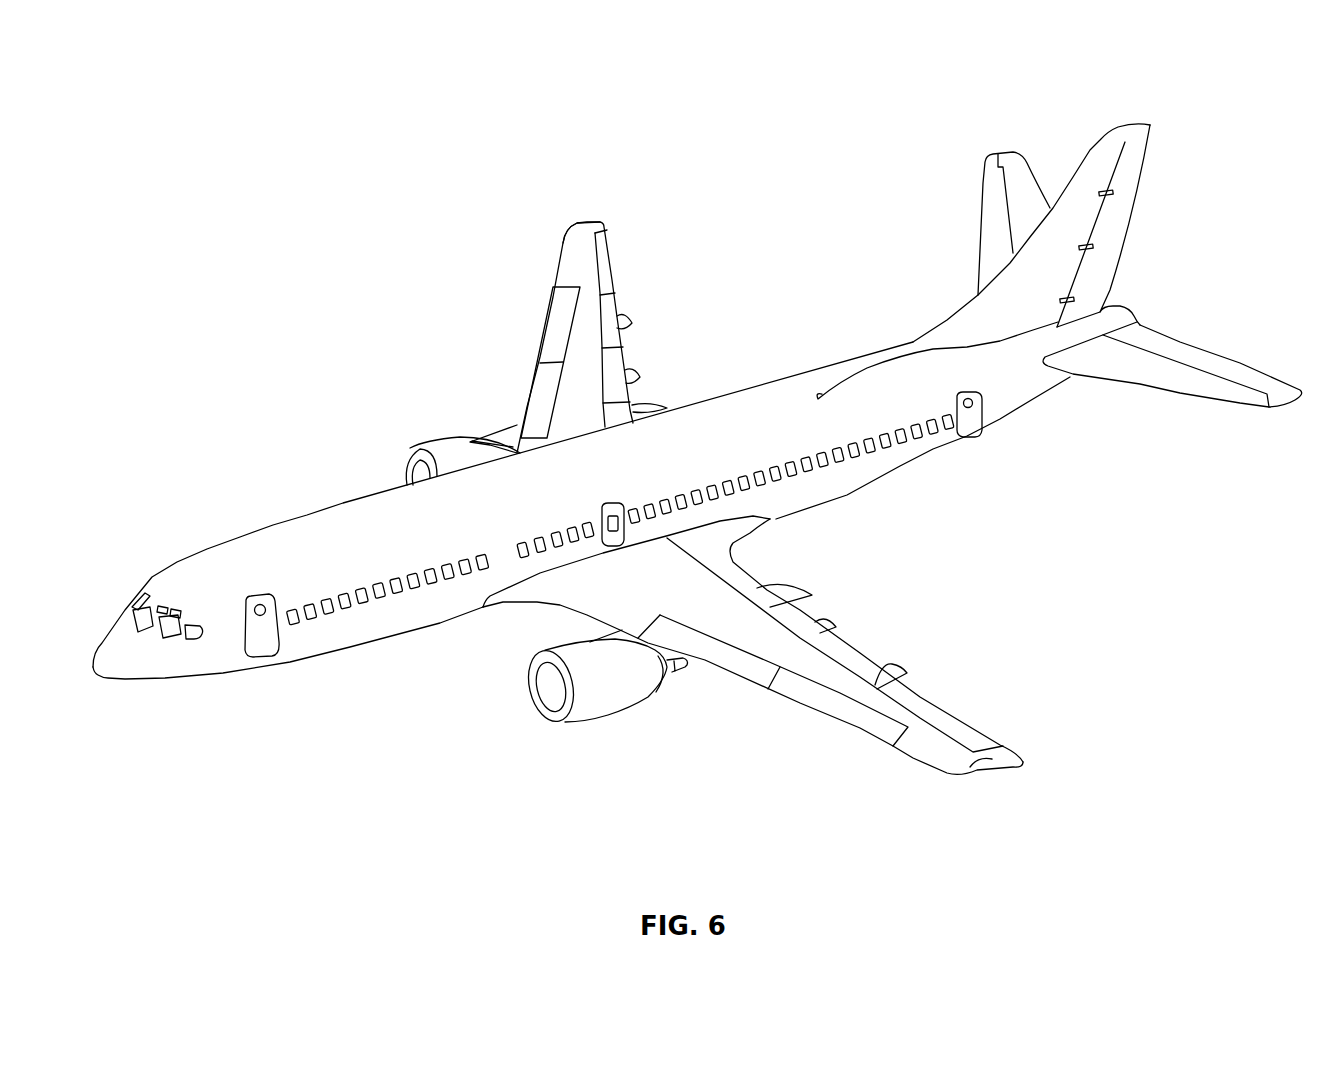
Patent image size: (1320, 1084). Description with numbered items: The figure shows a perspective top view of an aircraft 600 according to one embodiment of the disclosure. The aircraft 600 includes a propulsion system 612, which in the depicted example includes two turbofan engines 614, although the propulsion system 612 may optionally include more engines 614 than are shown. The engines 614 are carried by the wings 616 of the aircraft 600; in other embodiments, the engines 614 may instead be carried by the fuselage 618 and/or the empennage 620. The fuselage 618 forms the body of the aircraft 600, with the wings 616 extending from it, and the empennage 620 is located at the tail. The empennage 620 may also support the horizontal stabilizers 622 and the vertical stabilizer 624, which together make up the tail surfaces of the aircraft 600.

The aircraft 600 is at (368, 193).
The propulsion system 612 is at (500, 779).
The turbofan engines 614 is at (455, 441).
The wings 616 is at (588, 228).
The fuselage 618 is at (342, 632).
The empennage 620 is at (860, 332).
The horizontal stabilizers 622 is at (1013, 163).
The vertical stabilizer 624 is at (1113, 138).